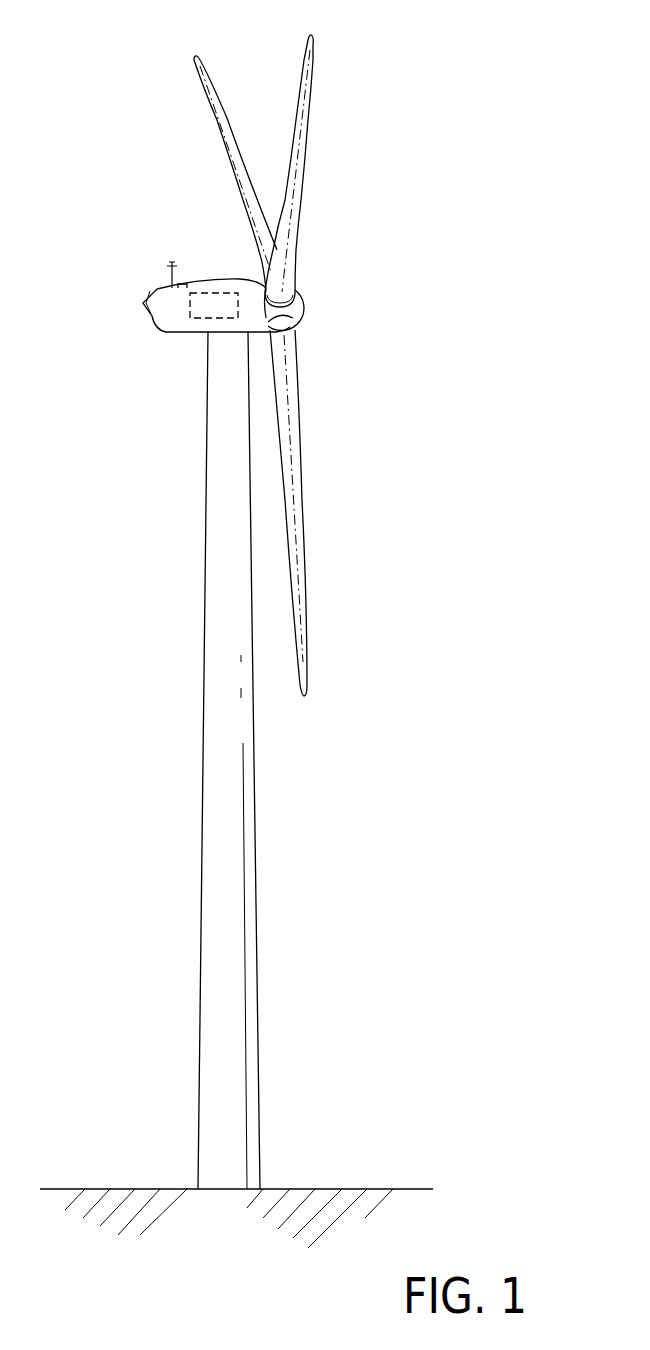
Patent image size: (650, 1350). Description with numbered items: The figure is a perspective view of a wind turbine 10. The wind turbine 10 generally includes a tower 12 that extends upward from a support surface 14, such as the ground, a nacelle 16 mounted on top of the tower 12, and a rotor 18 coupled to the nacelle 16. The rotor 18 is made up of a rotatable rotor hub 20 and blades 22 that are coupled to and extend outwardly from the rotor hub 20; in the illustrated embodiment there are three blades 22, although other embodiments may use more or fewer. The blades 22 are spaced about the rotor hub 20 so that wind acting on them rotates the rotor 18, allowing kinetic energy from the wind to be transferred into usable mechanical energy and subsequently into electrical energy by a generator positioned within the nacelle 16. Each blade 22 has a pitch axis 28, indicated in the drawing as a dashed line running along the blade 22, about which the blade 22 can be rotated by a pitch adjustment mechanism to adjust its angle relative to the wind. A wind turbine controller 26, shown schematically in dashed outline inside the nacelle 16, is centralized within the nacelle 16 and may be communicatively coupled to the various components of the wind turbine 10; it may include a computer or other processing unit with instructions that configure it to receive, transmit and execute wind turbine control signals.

The wind turbine 10 is at (436, 116).
The tower 12 is at (215, 877).
The support surface 14 is at (125, 1189).
The nacelle 16 is at (185, 332).
The rotor 18 is at (314, 279).
The rotor hub 20 is at (308, 315).
The blade 22 is at (303, 80).
The wind turbine controller 26 is at (218, 293).
The pitch axis 28 is at (240, 212).